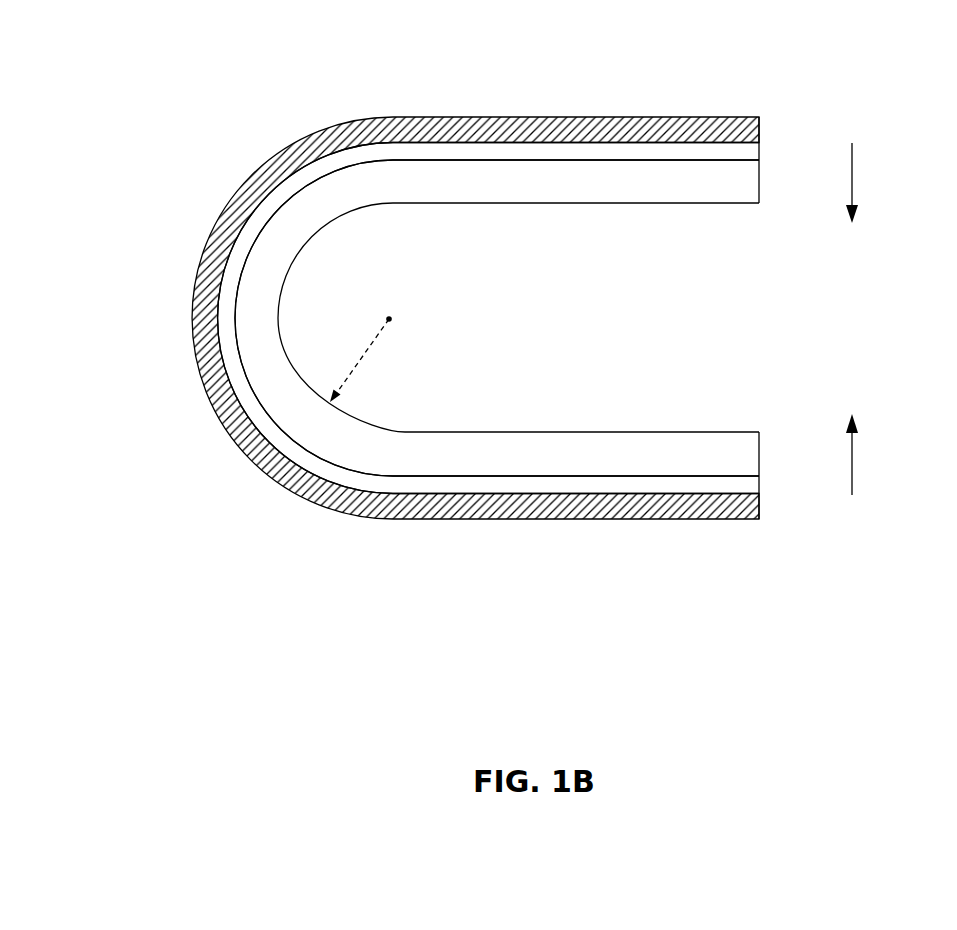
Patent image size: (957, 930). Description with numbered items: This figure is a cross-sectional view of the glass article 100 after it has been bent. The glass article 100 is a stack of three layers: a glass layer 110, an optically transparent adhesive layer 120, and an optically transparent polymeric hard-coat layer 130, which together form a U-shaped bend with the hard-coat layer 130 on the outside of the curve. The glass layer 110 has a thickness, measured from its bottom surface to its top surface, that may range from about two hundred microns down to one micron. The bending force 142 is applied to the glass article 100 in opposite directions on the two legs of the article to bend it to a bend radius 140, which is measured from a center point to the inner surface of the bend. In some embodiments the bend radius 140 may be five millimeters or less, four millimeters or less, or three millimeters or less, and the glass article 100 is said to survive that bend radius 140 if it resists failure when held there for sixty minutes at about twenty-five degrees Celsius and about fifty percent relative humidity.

The glass article 100 is at (521, 342).
The glass layer 110 is at (702, 460).
The optically transparent adhesive layer 120 is at (585, 485).
The optically transparent polymeric hard-coat layer 130 is at (428, 509).
The bend radius 140 is at (372, 342).
The bending force 142 is at (852, 162).